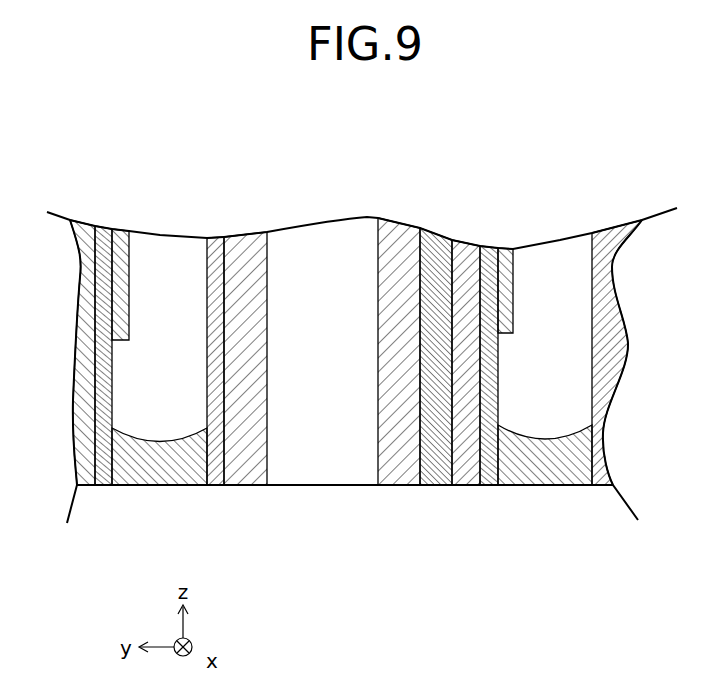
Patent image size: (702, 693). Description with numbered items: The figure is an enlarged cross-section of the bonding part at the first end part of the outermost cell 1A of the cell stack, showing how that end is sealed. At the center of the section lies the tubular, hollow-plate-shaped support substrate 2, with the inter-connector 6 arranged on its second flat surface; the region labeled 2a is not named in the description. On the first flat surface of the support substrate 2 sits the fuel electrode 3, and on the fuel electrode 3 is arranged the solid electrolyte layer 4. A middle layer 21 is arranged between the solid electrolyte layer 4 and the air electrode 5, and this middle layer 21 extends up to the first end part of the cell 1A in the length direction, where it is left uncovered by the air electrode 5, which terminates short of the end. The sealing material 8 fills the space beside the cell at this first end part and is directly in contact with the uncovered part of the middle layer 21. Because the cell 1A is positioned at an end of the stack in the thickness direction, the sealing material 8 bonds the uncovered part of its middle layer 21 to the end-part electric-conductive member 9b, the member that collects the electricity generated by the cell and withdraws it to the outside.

The cell 1A is at (513, 173).
The support substrate 2 is at (403, 243).
The top surface of electrode layer 2a is at (317, 258).
The fuel electrode 3 is at (440, 250).
The solid electrolyte layer 4 is at (82, 213).
The air electrode 5 is at (122, 248).
The inter-connector 6 is at (217, 278).
The sealing material 8 is at (173, 467).
The end-part electric-conductive member 9b is at (605, 263).
The middle layer 21 is at (107, 227).